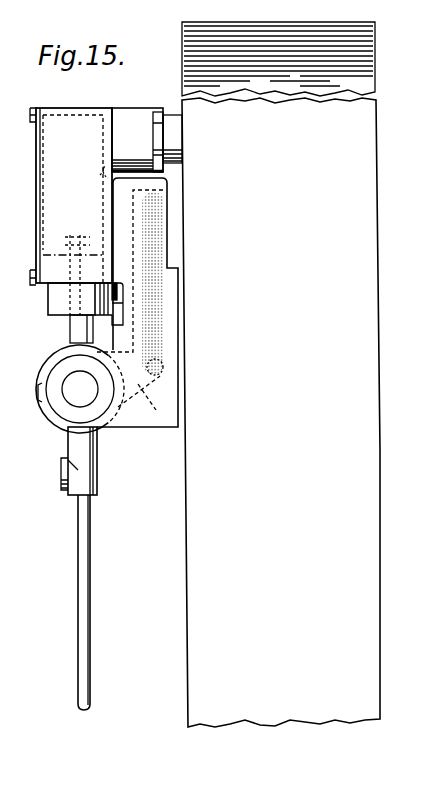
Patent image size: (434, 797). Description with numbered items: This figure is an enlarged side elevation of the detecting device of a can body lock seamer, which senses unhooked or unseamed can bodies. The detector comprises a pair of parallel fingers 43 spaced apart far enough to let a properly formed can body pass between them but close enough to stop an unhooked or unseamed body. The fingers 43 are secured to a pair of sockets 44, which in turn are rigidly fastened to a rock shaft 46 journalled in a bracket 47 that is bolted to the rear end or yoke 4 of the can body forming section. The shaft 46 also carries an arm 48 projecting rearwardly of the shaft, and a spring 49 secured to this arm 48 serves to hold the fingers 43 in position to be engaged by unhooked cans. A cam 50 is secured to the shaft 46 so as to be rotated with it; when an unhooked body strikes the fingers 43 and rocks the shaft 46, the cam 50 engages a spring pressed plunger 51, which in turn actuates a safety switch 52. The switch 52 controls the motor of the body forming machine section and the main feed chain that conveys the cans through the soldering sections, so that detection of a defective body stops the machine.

The yoke 4 is at (370, 460).
The fingers 43 is at (82, 548).
The sockets 44 is at (92, 467).
The rock shaft 46 is at (72, 398).
The bracket 47 is at (170, 397).
The arm 48 is at (139, 398).
The spring 49 is at (158, 316).
The cam 50 is at (37, 373).
The spring pressed plunger 51 is at (70, 330).
The safety switch 52 is at (72, 232).